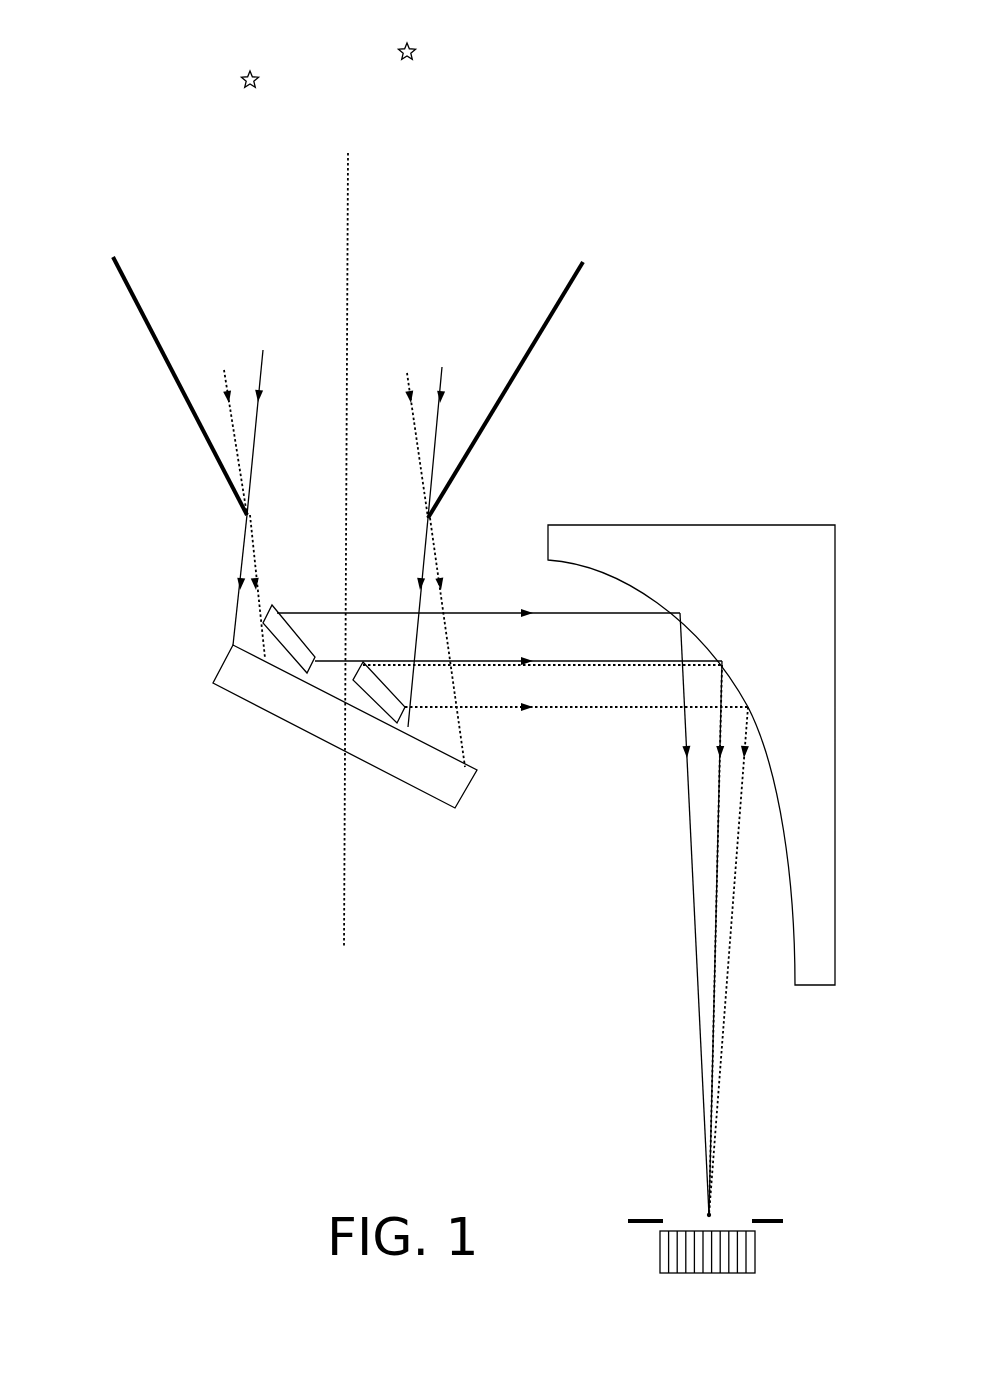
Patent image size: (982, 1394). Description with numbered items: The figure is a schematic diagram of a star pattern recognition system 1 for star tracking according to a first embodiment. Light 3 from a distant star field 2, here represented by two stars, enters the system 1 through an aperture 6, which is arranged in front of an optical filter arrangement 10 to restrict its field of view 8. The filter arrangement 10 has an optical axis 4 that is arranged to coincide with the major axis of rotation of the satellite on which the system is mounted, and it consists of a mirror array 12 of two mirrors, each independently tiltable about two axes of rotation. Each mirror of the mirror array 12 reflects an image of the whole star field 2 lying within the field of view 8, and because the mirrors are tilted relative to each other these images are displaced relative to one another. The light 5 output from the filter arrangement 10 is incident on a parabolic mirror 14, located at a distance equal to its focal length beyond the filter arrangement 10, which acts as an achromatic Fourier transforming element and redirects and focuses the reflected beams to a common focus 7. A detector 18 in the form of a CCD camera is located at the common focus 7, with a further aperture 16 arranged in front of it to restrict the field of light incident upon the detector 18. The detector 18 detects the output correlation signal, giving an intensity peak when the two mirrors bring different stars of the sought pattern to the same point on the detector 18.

The system 1 is at (222, 994).
The star field 2 is at (392, 50).
The light 3 is at (403, 363).
The optical axis 4 is at (356, 207).
The light output 5 is at (598, 717).
The aperture 6 is at (166, 379).
The common focus 7 is at (718, 1210).
The field of view 8 is at (419, 513).
The optical filter arrangement 10 is at (240, 701).
The mirror array 12 is at (334, 658).
The parabolic mirror 14 is at (806, 518).
The aperture 16 is at (618, 1226).
The detector 18 is at (652, 1280).